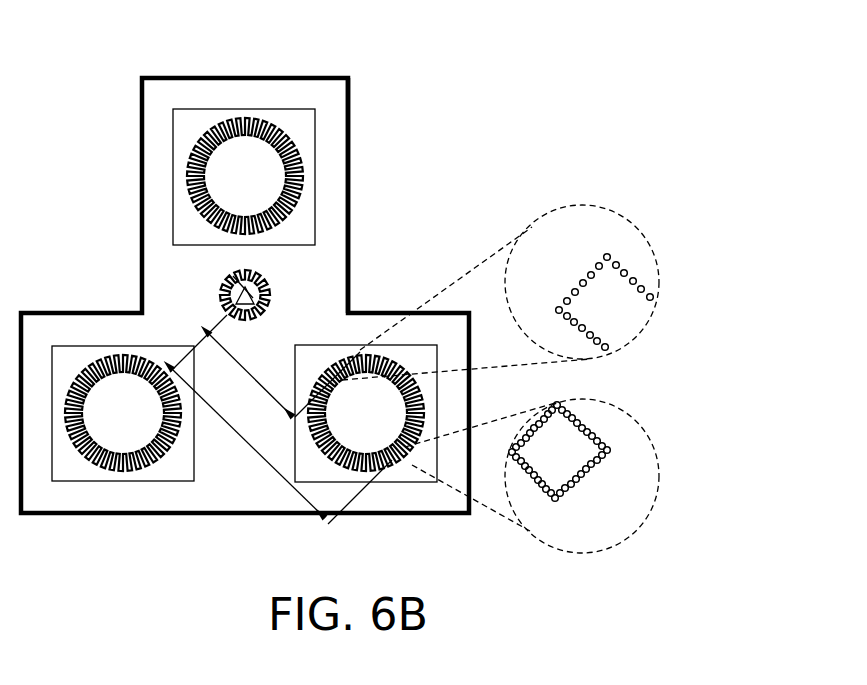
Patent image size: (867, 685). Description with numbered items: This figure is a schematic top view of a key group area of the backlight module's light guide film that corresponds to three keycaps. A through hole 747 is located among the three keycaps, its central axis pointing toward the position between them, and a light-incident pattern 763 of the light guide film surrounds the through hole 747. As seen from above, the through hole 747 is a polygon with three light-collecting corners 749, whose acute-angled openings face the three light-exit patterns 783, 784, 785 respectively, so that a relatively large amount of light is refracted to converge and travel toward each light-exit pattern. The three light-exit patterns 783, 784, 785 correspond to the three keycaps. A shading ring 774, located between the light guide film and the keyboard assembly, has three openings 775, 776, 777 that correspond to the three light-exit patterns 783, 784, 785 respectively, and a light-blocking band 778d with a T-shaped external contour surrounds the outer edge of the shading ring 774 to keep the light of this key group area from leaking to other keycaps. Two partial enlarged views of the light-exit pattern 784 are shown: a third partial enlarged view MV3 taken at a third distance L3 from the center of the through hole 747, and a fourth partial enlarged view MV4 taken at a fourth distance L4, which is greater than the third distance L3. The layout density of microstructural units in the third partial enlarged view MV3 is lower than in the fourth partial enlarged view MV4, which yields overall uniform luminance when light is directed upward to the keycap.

The shading ring 774 is at (158, 97).
The light-blocking band 778d is at (350, 107).
The opening 775 is at (303, 108).
The light-exit pattern 783 is at (247, 122).
The opening 777 is at (75, 482).
The light-exit pattern 785 is at (125, 470).
The opening 776 is at (400, 482).
The light-exit pattern 784 is at (420, 398).
The light-collecting corner 749 is at (232, 280).
The through hole 747 is at (224, 298).
The light-incident pattern 763 is at (258, 279).
The third distance L3 is at (265, 366).
The fourth distance L4 is at (282, 447).
The third partial enlarged view MV3 is at (634, 226).
The fourth partial enlarged view MV4 is at (637, 413).